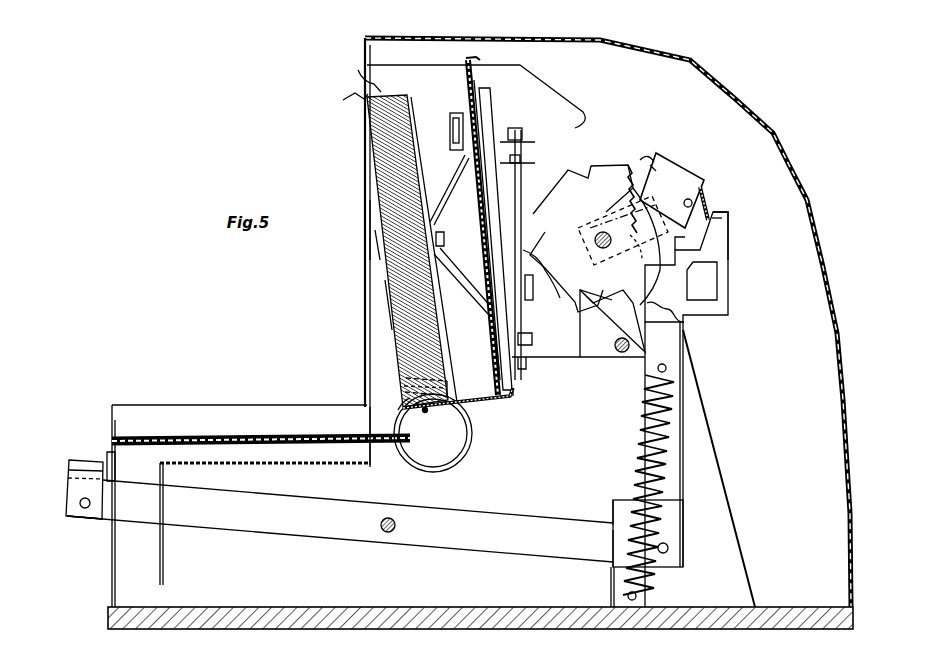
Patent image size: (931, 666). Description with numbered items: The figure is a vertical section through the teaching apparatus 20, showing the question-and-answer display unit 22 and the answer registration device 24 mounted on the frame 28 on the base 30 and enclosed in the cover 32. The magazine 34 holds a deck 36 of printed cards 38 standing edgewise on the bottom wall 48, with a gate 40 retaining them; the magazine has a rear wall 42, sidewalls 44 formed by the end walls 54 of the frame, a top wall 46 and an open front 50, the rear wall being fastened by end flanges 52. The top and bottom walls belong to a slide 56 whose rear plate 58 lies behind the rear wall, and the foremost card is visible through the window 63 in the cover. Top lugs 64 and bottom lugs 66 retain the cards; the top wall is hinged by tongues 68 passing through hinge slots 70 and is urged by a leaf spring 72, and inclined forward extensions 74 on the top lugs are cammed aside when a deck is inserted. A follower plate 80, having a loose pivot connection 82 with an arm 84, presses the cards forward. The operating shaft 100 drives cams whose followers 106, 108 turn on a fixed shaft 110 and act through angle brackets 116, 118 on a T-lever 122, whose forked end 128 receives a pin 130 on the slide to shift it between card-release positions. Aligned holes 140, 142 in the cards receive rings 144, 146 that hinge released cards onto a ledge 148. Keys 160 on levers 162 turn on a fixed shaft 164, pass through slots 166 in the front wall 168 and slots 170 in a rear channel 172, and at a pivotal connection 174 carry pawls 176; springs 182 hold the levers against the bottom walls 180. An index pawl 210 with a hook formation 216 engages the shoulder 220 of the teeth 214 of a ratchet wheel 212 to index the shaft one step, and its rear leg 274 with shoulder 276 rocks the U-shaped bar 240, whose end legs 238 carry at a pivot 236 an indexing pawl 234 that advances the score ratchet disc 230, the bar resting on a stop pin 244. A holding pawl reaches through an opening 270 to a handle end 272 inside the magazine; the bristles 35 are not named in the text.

The teaching apparatus 20 is at (336, 56).
The question-and-answer display unit 22 is at (362, 118).
The answer registration device 24 is at (64, 490).
The frame 28 is at (738, 517).
The base 30 is at (673, 630).
The cover 32 is at (738, 96).
The magazine 34 is at (424, 414).
The bristles 35 is at (385, 252).
The deck 36 is at (394, 306).
The printed cards 38 is at (180, 436).
The gate 40 is at (397, 412).
The rear wall 42 is at (502, 348).
The sidewalls 44 is at (420, 124).
The top wall 46 is at (422, 65).
The bottom wall 48 is at (480, 402).
The open front 50 is at (404, 379).
The end flanges 52 is at (492, 101).
The end walls 54 is at (572, 124).
The slide 56 is at (516, 399).
The rear plate 58 is at (533, 345).
The window 63 is at (368, 233).
The top lugs 64 is at (357, 88).
The bottom lugs 66 is at (405, 394).
The tongues 68 is at (468, 58).
The hinge slots 70 is at (466, 76).
The leaf spring 72 is at (480, 80).
The inclined forward extensions 74 is at (342, 99).
The follower plate 80 is at (418, 186).
The loose pivot connection 82 is at (445, 244).
The arm 84 is at (470, 288).
The operating shaft 100 is at (596, 250).
The follower 106 is at (583, 360).
The follower 108 is at (536, 366).
The fixed shaft 110 is at (622, 354).
The angle bracket 116 is at (524, 144).
The angle bracket 118 is at (526, 165).
The T-lever 122 is at (522, 190).
The forked end 128 is at (541, 287).
The pin 130 is at (536, 264).
The holes 140 is at (452, 392).
The holes 142 is at (479, 391).
The ring 144 is at (465, 460).
The ring 146 is at (461, 441).
The ledge 148 is at (312, 464).
The keys 160 is at (76, 460).
The levers 162 is at (288, 532).
The fixed shaft 164 is at (387, 534).
The slots 166 is at (112, 549).
The front wall 168 is at (110, 455).
The slots 170 is at (613, 519).
The rear channel 172 is at (611, 589).
The pivotal connection 174 is at (669, 549).
The pawl 176 is at (684, 397).
The bottom walls 180 is at (612, 563).
The springs 182 is at (683, 471).
The pawl 210 is at (684, 322).
The ratchet wheel 212 is at (594, 172).
The teeth 214 is at (633, 163).
The hook formation 216 is at (702, 281).
The shoulder 220 is at (676, 182).
The ratchet disc 230 is at (678, 239).
The indexing pawl 234 is at (651, 160).
The pivot 236 is at (706, 198).
The end legs 238 is at (700, 186).
The U-shaped bar 240 is at (660, 170).
The stop pin 244 is at (641, 253).
The opening 270 is at (467, 174).
The handle end 272 is at (450, 135).
The rear leg 274 is at (729, 312).
The shoulder 276 is at (729, 240).